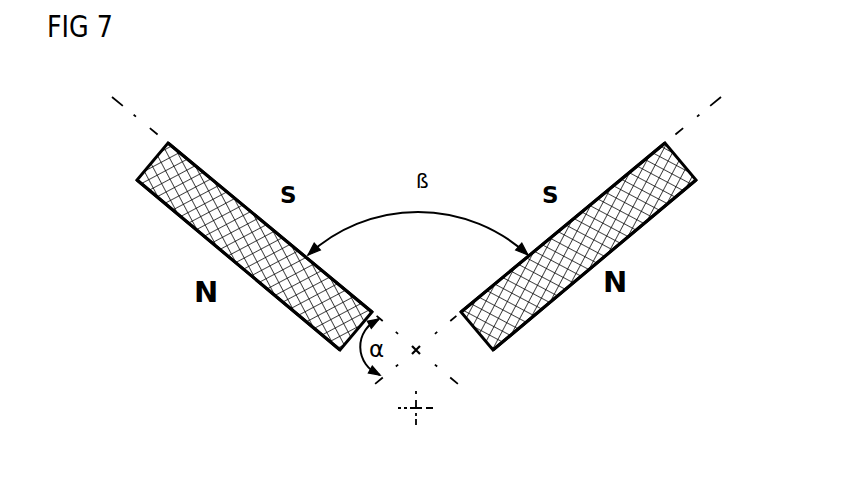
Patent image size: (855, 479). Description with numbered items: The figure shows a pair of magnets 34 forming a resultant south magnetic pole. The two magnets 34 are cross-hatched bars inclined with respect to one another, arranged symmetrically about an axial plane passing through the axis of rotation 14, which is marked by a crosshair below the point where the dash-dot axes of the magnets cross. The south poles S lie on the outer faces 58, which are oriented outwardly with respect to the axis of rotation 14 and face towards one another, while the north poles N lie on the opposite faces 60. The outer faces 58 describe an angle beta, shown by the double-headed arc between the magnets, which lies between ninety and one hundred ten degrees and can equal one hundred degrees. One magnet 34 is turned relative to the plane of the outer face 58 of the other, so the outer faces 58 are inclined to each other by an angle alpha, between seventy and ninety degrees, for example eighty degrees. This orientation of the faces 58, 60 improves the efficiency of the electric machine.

The axis of rotation 14 is at (421, 410).
The magnets 34 is at (197, 215).
The outer faces 58 is at (233, 195).
The faces 60 is at (302, 320).